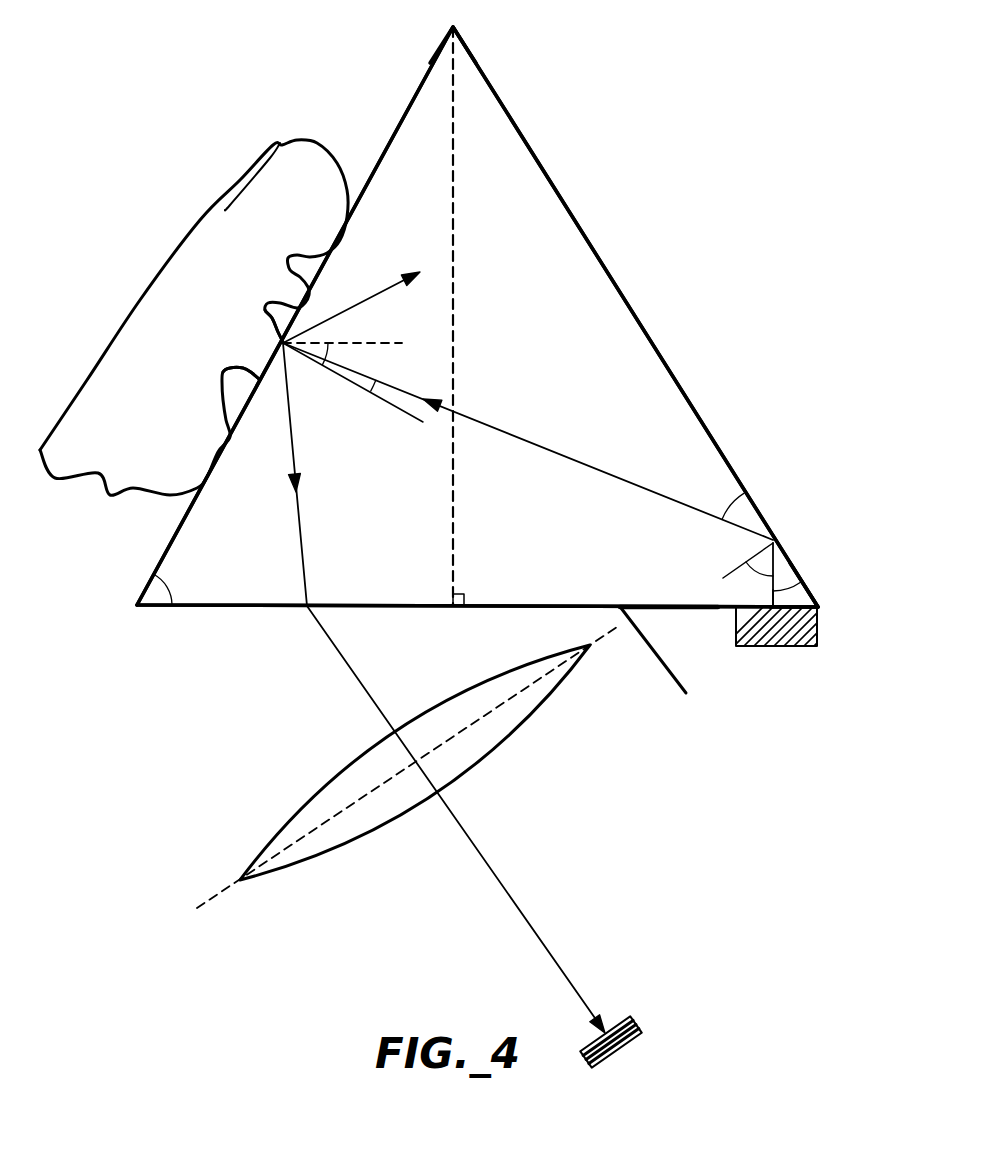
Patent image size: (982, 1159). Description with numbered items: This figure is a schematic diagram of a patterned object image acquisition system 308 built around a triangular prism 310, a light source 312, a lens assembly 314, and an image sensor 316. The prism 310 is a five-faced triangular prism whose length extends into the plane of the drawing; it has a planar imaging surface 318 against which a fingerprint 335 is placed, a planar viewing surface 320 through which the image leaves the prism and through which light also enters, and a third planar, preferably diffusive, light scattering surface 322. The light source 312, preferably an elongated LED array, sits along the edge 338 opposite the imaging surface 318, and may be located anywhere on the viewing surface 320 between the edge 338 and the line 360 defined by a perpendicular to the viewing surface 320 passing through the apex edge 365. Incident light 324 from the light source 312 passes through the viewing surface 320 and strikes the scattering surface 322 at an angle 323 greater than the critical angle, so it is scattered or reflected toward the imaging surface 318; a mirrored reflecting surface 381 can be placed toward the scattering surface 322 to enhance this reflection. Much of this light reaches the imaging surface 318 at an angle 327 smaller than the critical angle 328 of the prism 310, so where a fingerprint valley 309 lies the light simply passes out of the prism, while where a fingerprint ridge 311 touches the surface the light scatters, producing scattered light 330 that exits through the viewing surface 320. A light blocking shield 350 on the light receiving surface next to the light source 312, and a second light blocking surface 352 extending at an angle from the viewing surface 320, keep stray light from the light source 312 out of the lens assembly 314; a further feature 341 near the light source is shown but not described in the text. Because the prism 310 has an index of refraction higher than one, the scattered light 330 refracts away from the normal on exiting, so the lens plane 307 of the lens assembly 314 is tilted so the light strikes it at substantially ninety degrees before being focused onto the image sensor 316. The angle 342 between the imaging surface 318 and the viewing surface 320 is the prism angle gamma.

The lens plane 307 is at (217, 896).
The patterned object image acquisition system 308 is at (652, 138).
The fingerprint valley 309 is at (258, 378).
The triangular prism 310 is at (487, 125).
The fingerprint ridge 311 is at (283, 343).
The light source 312 is at (788, 647).
The lens assembly 314 is at (290, 824).
The image sensor 316 is at (623, 1047).
The imaging surface 318 is at (408, 104).
The viewing surface 320 is at (233, 607).
The light scattering surface 322 is at (779, 580).
The angle of incidence on scattering surface 323 is at (786, 592).
The incident light 324 is at (744, 494).
The angle of incidence on imaging surface 327 is at (374, 386).
The critical angle 328 is at (327, 354).
The scattered light 330 is at (380, 290).
The fingerprint 335 is at (283, 257).
The edge of prism 338 is at (820, 608).
The gap between light source and reflecting surface 341 is at (795, 603).
The angle between imaging surface and viewing surface 342 is at (168, 588).
The light blocking shield 350 is at (659, 610).
The second light blocking surface 352 is at (667, 672).
The line on viewing surface 360 is at (453, 198).
The apex edge of prism 365 is at (453, 25).
The reflecting surface 381 is at (730, 463).